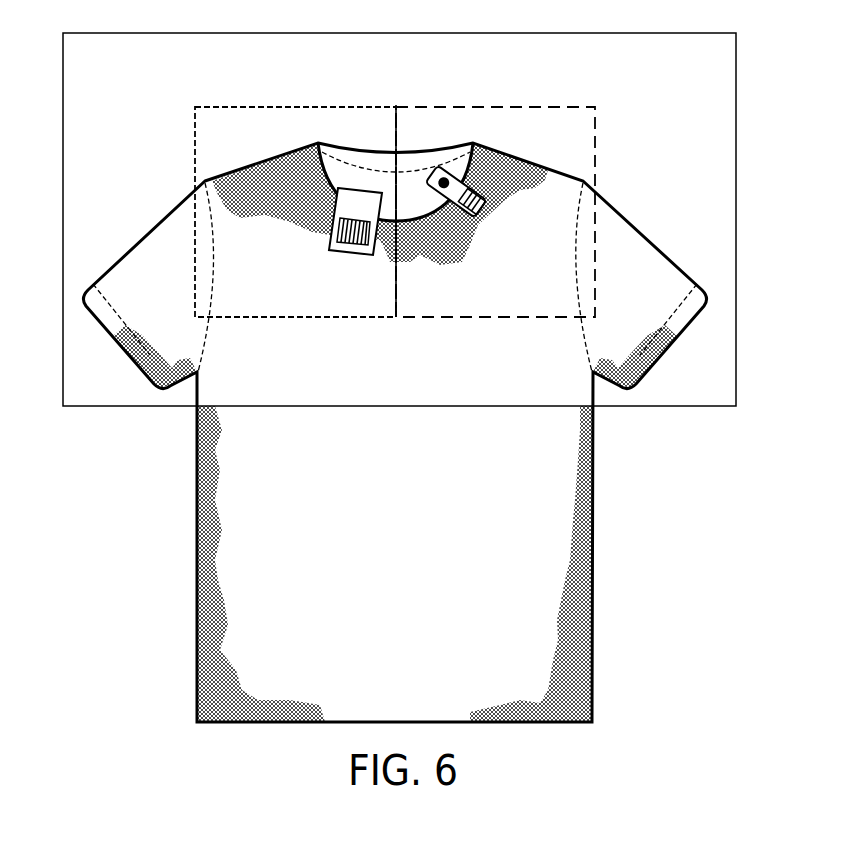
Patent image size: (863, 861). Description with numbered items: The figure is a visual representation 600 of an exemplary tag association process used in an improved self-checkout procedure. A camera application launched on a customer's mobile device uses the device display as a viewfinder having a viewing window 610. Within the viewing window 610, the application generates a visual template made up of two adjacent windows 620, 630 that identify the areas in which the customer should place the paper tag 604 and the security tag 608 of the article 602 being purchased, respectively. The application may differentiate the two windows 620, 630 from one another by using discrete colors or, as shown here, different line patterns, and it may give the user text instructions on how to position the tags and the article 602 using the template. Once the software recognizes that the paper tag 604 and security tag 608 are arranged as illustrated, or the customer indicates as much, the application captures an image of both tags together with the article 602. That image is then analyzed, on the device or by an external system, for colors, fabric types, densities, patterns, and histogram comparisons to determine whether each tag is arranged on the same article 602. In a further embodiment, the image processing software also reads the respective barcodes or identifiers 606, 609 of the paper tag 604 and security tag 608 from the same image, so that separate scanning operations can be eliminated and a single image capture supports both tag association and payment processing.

The visual representation 600 is at (452, 213).
The viewing window 610 is at (737, 172).
The window 620 is at (318, 107).
The window 630 is at (500, 107).
The article 602 is at (594, 505).
The paper tag 604 is at (321, 250).
The barcode or identifier 606 is at (330, 227).
The security tag 608 is at (483, 188).
The barcode or identifier 609 is at (492, 213).